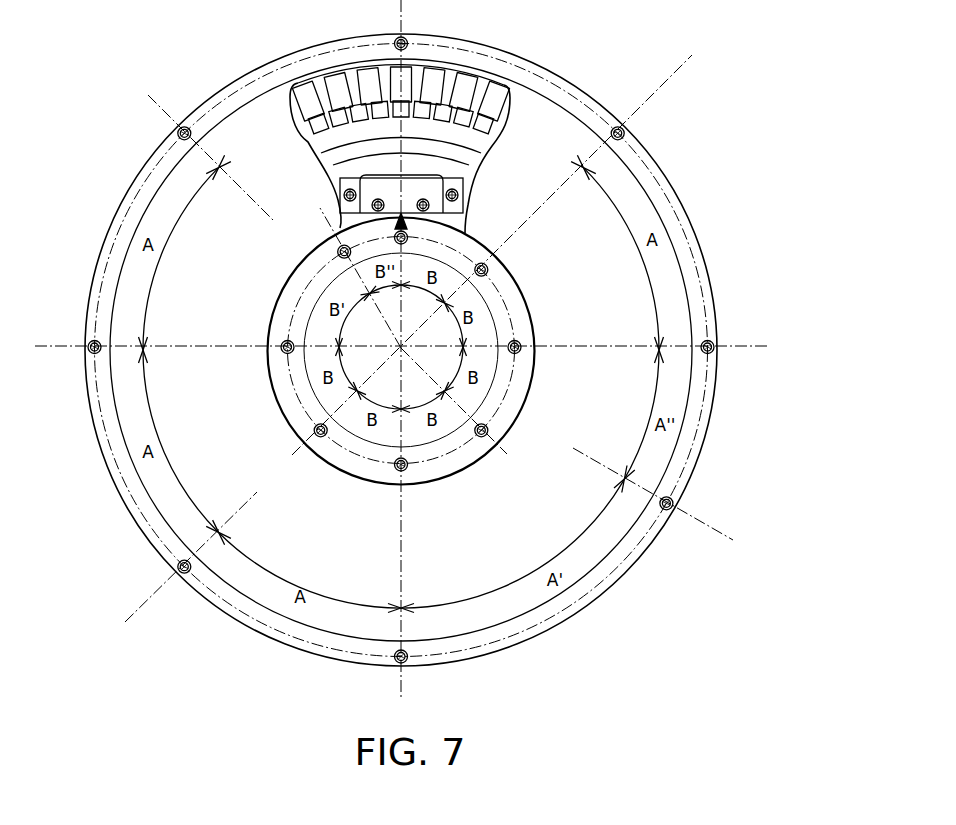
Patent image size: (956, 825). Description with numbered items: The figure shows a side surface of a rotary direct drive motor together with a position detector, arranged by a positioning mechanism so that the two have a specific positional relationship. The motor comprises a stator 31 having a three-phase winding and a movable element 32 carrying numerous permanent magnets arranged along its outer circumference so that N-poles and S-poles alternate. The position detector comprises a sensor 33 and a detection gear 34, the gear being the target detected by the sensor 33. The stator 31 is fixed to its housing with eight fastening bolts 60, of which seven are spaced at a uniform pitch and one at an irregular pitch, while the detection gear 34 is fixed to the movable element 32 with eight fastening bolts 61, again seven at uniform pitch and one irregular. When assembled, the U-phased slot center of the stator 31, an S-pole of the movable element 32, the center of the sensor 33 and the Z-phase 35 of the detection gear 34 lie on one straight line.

The stator 31 is at (370, 84).
The movable element 32 is at (427, 128).
The sensor 33 is at (418, 182).
The detection gear 34 is at (663, 344).
The Z-phase 35 is at (413, 230).
The fastening bolts 60 is at (672, 498).
The fastening bolts 61 is at (274, 328).